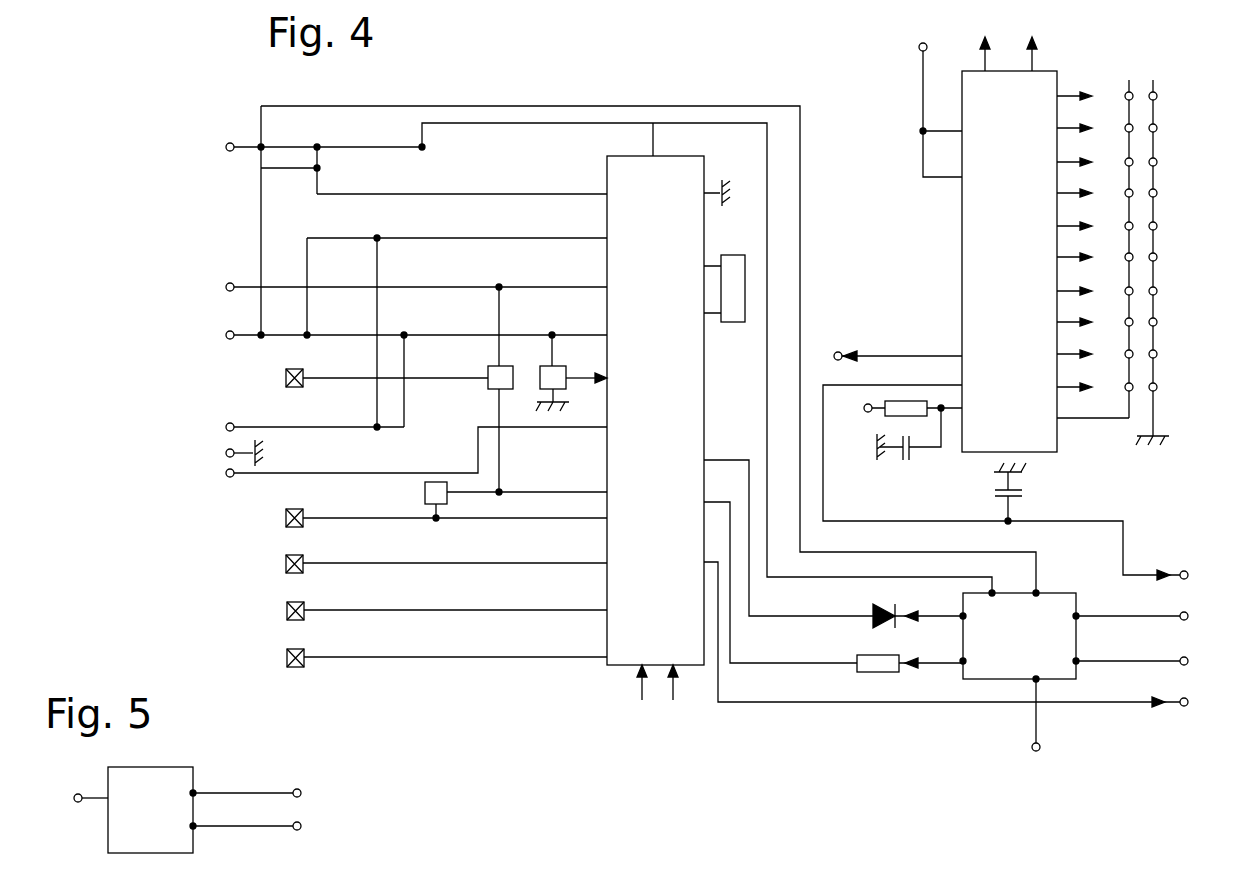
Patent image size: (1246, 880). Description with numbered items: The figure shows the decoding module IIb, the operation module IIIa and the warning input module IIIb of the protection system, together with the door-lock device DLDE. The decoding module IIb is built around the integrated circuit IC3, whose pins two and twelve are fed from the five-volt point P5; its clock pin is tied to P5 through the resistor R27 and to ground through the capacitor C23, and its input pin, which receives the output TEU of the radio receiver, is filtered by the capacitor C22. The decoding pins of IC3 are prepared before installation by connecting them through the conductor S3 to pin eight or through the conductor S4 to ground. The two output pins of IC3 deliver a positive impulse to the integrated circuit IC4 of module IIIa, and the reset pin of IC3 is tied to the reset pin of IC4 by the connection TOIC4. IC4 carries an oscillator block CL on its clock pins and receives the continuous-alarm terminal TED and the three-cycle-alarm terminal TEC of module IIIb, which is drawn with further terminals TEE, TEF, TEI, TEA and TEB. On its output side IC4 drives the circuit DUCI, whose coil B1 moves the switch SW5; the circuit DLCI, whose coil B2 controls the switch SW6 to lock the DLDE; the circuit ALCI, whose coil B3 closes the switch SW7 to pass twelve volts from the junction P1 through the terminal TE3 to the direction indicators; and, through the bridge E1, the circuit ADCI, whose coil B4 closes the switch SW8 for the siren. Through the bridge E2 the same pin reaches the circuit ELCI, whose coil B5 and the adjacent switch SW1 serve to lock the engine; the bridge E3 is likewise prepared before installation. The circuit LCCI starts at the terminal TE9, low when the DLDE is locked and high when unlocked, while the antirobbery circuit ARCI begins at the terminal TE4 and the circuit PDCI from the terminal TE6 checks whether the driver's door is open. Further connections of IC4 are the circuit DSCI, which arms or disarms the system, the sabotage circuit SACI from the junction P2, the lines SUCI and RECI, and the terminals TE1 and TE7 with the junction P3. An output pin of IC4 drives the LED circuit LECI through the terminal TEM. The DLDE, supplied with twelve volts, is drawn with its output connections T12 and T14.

In FIG. 4, the operation module of the antitheft system IIIa is at (523, 98).
In FIG. 4, the decoding module IIb is at (888, 106).
In FIG. 4, the warning input module IIIb is at (1019, 636).
In FIG. 4, the integrated circuit IC4 is at (668, 411).
In FIG. 4, the integrated circuit IC3 is at (1045, 244).
In FIG. 4, the clock CL is at (733, 288).
In FIG. 4, the terminal TE1 is at (309, 147).
In FIG. 4, the terminal TE3 is at (402, 385).
In FIG. 4, the terminal TE4 is at (402, 377).
In FIG. 4, the terminal TE6 is at (300, 427).
In FIG. 4, the terminal TE7 is at (230, 453).
In FIG. 4, the terminal TE9 is at (402, 454).
In FIG. 5, the terminal TE9 is at (76, 798).
In FIG. 4, the junction P1 is at (270, 139).
In FIG. 4, the junction P2 is at (326, 150).
In FIG. 4, the point P3 is at (412, 139).
In FIG. 4, the point of the voltage supply circuit P5 is at (920, 45).
In FIG. 4, the switch SW1 is at (286, 378).
In FIG. 4, the switch SW5 is at (286, 658).
In FIG. 4, the switch SW6 is at (286, 564).
In FIG. 4, the switch SW7 is at (286, 611).
In FIG. 4, the switch SW8 is at (286, 518).
In FIG. 4, the coil B1 is at (295, 650).
In FIG. 4, the relay coil B2 is at (294, 556).
In FIG. 4, the relay coil B3 is at (295, 603).
In FIG. 4, the relay coil B4 is at (294, 510).
In FIG. 4, the relay coil B5 is at (294, 370).
In FIG. 4, the bridge E1 is at (425, 492).
In FIG. 4, the bridge E2 is at (488, 366).
In FIG. 4, the bridge E3 is at (543, 366).
In FIG. 4, the signal line SUCI is at (521, 147).
In FIG. 4, the sabotage circuit SACI is at (521, 195).
In FIG. 4, the signal line RECI is at (521, 239).
In FIG. 4, the circuit DSCI is at (521, 286).
In FIG. 4, the circuit ARCI is at (521, 334).
In FIG. 4, the circuit ELCI is at (368, 378).
In FIG. 4, the circuit PDCI is at (338, 427).
In FIG. 4, the circuit LCCI is at (374, 473).
In FIG. 4, the circuit ADCI is at (521, 519).
In FIG. 4, the circuit DLCI is at (521, 564).
In FIG. 4, the circuit ALCI is at (521, 610).
In FIG. 4, the circuit DUCI is at (521, 657).
In FIG. 4, the resistor R27 is at (917, 408).
In FIG. 4, the capacitor C23 is at (912, 455).
In FIG. 4, the filter C22 is at (1012, 498).
In FIG. 4, the conductor S3 is at (1128, 82).
In FIG. 4, the conductor S4 is at (1153, 82).
In FIG. 4, the output terminal TED is at (835, 544).
In FIG. 4, the output terminal TEC is at (835, 587).
In FIG. 4, the terminal TEE is at (1006, 587).
In FIG. 4, the terminal TEF is at (1050, 587).
In FIG. 4, the terminal TEI is at (1143, 616).
In FIG. 4, the terminal TEA is at (1146, 661).
In FIG. 4, the terminal TEM is at (962, 636).
In FIG. 4, the terminal TEB is at (1035, 722).
In FIG. 4, the output of the radio receiver TEU is at (1033, 484).
In FIG. 4, the LED circuit LECI is at (1095, 703).
In FIG. 4, the connection to IC4 TOIC4 is at (890, 348).
In FIG. 5, the door lock device DLDE is at (150, 810).
In FIG. 5, the output terminal T12 is at (260, 790).
In FIG. 5, the terminal T14 is at (260, 830).